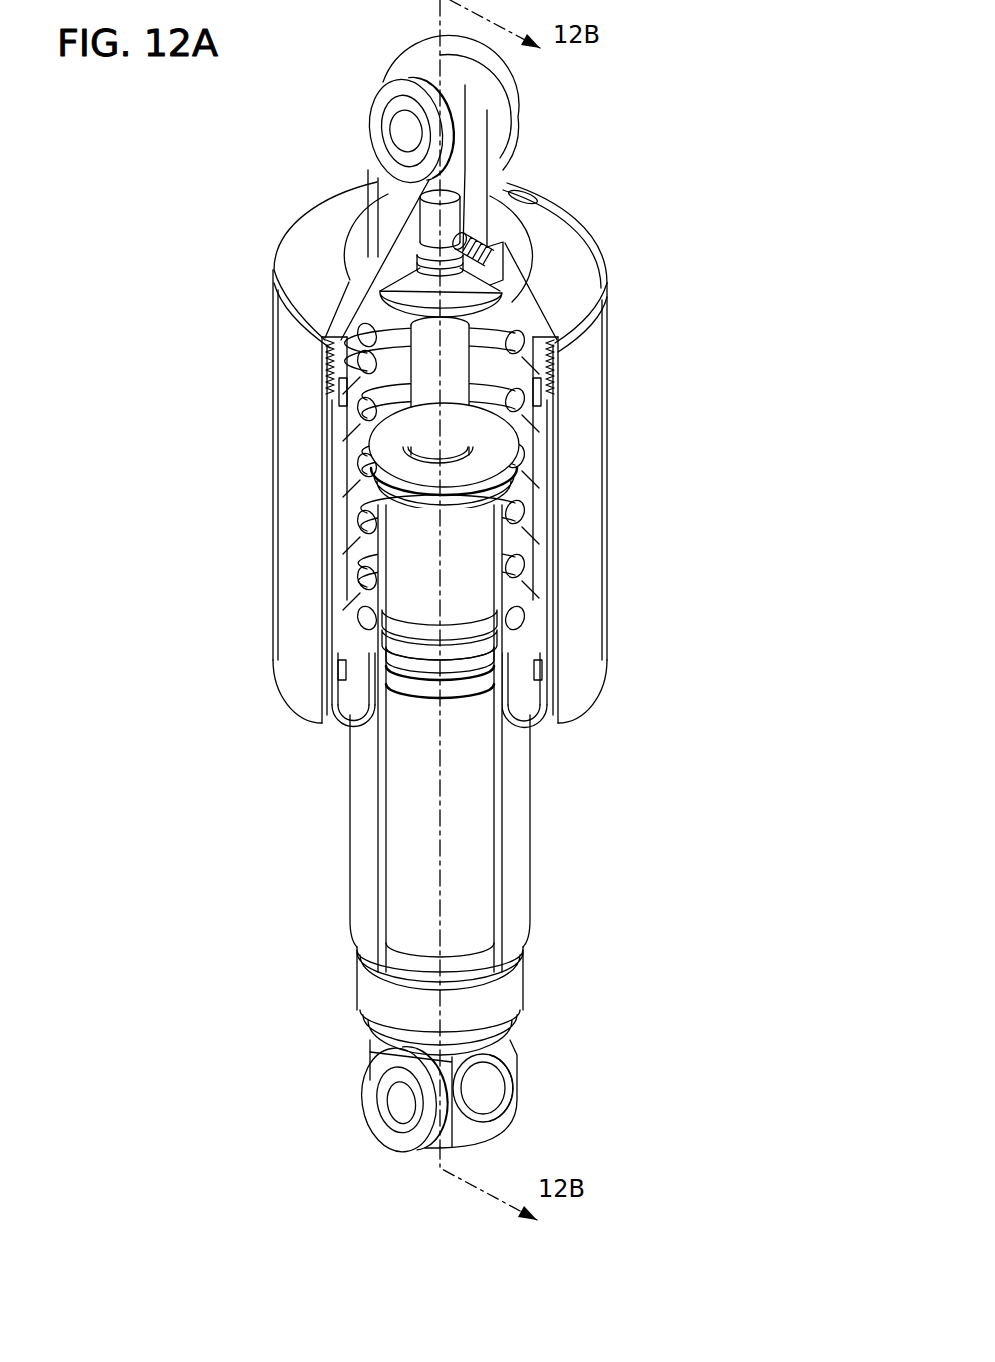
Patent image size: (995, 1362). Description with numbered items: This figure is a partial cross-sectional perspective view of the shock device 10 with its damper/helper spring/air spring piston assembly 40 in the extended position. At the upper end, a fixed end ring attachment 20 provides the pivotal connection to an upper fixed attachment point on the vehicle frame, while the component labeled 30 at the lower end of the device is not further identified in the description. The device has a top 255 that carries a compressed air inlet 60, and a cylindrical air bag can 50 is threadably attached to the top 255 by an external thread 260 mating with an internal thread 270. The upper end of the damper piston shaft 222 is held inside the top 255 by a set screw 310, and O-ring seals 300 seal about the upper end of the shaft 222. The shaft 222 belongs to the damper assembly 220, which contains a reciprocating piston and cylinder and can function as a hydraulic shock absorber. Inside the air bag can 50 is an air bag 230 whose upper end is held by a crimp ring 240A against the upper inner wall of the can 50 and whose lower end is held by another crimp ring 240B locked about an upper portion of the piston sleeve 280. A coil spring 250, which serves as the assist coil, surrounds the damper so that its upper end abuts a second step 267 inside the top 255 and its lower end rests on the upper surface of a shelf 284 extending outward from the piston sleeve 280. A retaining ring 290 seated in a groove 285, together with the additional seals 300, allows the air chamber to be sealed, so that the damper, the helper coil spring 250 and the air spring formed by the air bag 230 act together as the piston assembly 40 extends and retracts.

The shock device 10 is at (735, 178).
The fixed end ring attachment 20 is at (403, 130).
The lower clevis eye 30 is at (400, 1110).
The piston assembly 40 is at (600, 852).
The air bag can 50 is at (590, 377).
The compressed air inlet 60 is at (538, 203).
The damper assembly 220 is at (330, 1021).
The damper piston shaft 222 is at (433, 223).
The air bag 230 is at (548, 480).
The crimp ring 240A is at (542, 394).
The crimp ring 240B is at (542, 676).
The coil spring 250 is at (530, 505).
The top 255 is at (560, 300).
The external thread 260 is at (276, 278).
The second step 267 is at (513, 308).
The internal thread 270 is at (333, 358).
The piston sleeve 280 is at (520, 797).
The shelf 284 is at (513, 650).
The groove 285 is at (380, 492).
The retaining ring 290 is at (370, 483).
The O-ring seals 300 is at (400, 623).
The set screw 310 is at (464, 247).